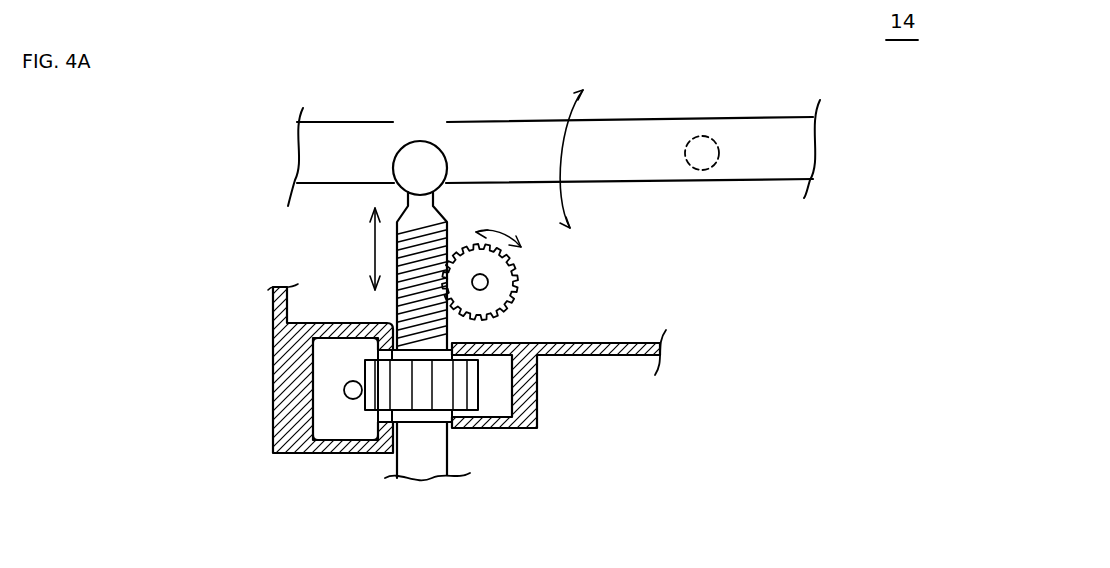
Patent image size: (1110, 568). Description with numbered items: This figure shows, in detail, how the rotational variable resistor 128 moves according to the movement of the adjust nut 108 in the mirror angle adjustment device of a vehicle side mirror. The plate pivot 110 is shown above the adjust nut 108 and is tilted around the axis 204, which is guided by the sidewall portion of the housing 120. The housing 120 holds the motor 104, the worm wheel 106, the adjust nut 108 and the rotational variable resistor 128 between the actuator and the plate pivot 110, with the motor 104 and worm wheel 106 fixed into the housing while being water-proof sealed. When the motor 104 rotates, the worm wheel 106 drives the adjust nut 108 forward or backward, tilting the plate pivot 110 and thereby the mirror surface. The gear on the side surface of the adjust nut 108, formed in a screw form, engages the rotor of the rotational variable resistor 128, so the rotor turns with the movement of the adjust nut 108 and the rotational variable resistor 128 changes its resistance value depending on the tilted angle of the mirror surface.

The motor 104 is at (330, 415).
The worm wheel 106 is at (446, 424).
The adjust nut 108 is at (406, 206).
The plate pivot 110 is at (442, 132).
The housing 120 is at (278, 356).
The rotational variable resistor 128 is at (503, 277).
The axis 204 is at (702, 153).